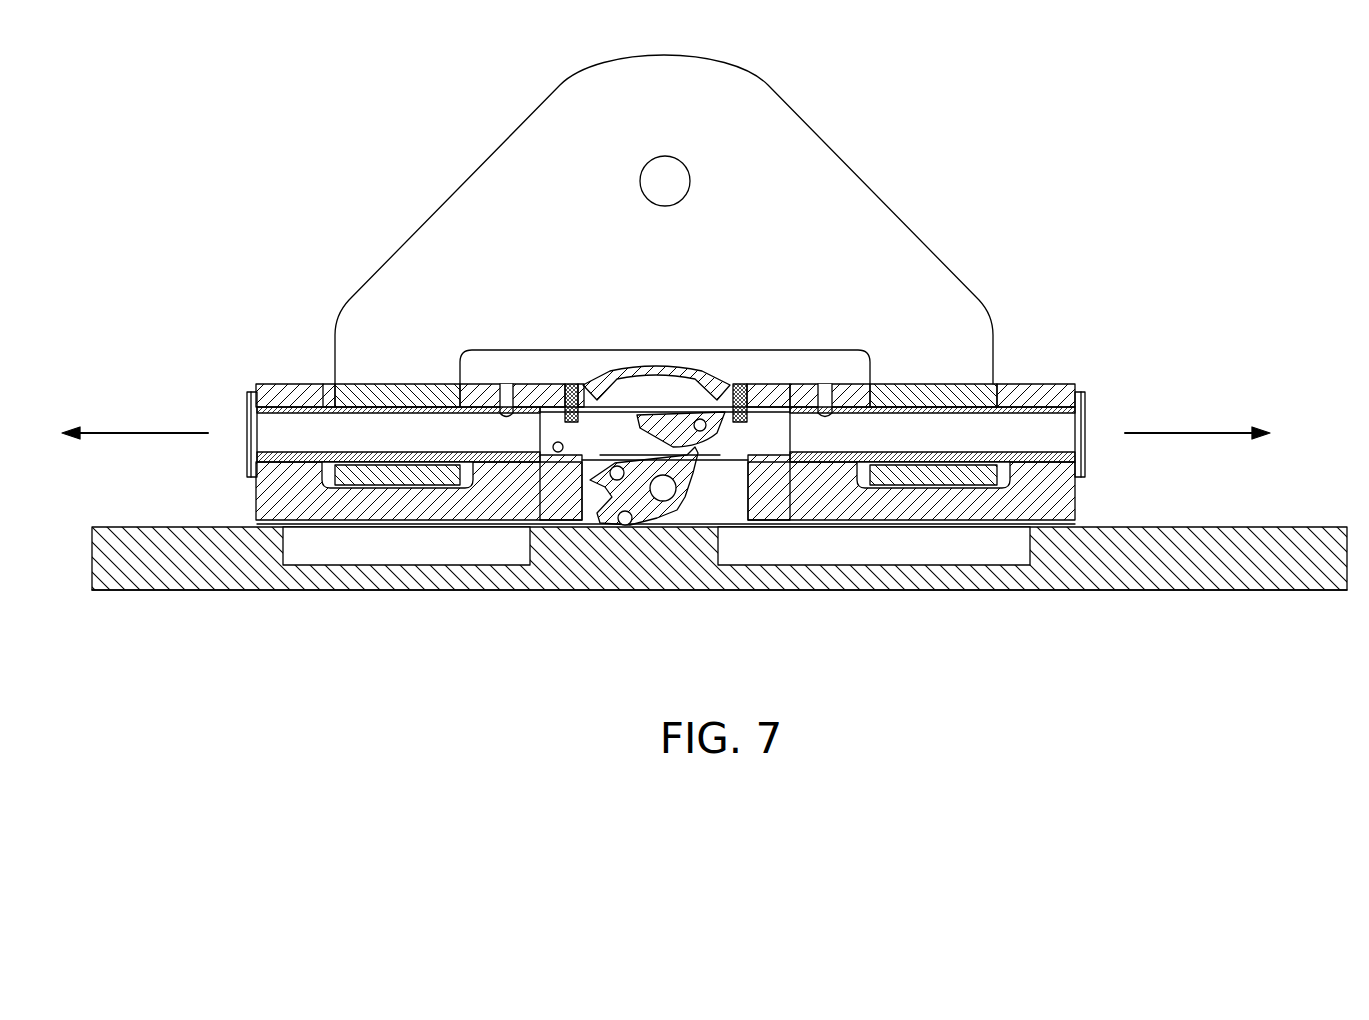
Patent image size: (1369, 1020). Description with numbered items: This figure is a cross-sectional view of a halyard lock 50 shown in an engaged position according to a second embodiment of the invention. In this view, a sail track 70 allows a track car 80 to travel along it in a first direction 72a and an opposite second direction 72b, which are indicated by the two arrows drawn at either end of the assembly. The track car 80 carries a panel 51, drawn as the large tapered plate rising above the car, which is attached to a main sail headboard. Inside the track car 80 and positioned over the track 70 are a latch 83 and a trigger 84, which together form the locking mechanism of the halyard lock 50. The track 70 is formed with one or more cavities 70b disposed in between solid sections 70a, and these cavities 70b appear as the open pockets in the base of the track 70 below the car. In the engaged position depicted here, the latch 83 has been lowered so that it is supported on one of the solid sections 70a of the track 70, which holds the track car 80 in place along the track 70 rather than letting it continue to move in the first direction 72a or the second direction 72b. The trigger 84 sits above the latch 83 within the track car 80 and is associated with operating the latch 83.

The halyard lock 50 is at (1023, 160).
The panel 51 is at (786, 201).
The sail track 70 is at (719, 578).
The solid section 70a is at (185, 577).
The cavity 70b is at (386, 555).
The first direction 72a is at (133, 433).
The second direction 72b is at (1197, 433).
The track car 80 is at (1045, 430).
The latch 83 is at (649, 510).
The trigger 84 is at (667, 420).